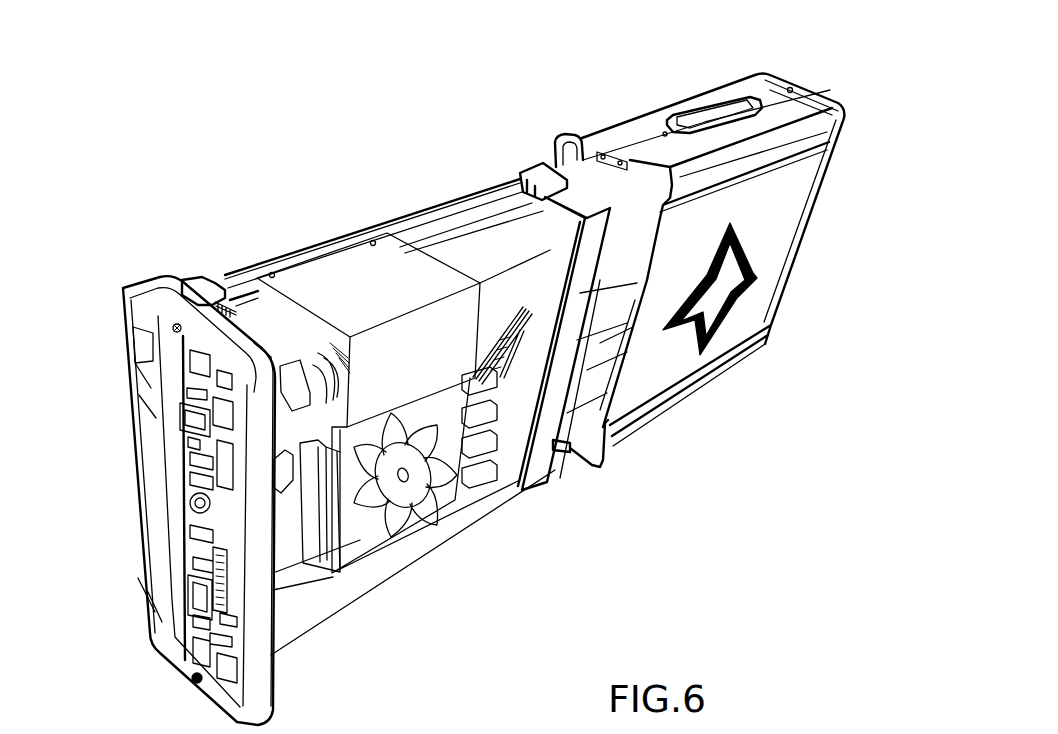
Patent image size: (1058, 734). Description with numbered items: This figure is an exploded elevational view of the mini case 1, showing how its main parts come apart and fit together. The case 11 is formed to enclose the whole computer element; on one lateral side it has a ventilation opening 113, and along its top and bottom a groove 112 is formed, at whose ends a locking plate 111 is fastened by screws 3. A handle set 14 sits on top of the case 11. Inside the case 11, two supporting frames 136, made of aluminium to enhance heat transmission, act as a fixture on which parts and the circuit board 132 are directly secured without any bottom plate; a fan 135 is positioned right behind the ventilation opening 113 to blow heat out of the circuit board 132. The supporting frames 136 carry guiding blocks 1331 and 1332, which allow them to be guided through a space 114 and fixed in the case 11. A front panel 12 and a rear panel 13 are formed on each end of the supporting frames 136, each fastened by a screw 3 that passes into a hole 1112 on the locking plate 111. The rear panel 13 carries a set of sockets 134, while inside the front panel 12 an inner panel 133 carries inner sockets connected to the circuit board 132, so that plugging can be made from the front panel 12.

The mini case 1 is at (700, 453).
The screw 3 is at (163, 292).
The case 11 is at (790, 230).
The front panel 12 is at (832, 110).
The rear panel 13 is at (121, 290).
The handle set 14 is at (713, 100).
The locking plate 111 is at (603, 152).
The groove 112 is at (790, 82).
The ventilation opening 113 is at (752, 294).
The space 114 is at (568, 146).
The circuit board 132 is at (307, 533).
The inner panel 133 is at (547, 460).
The set of sockets 134 is at (192, 503).
The fan 135 is at (407, 493).
The supporting frames 136 is at (228, 277).
The hole 1112 is at (614, 152).
The guiding block 1331 is at (540, 175).
The guiding block 1332 is at (205, 283).